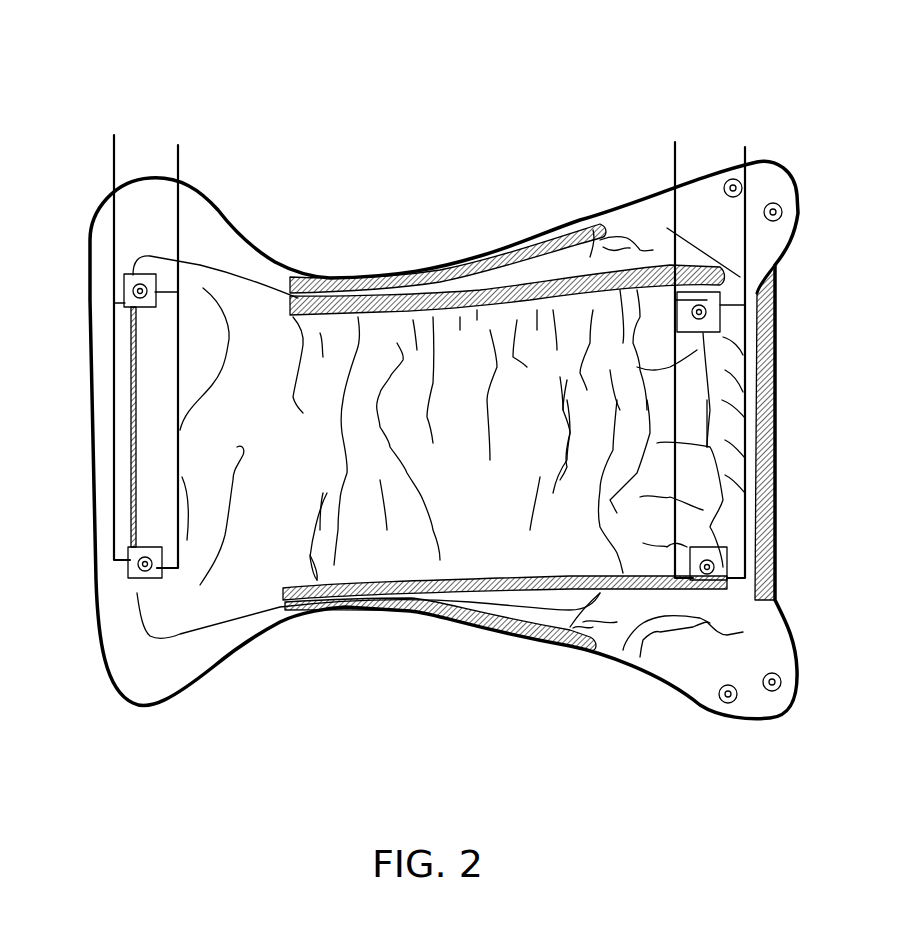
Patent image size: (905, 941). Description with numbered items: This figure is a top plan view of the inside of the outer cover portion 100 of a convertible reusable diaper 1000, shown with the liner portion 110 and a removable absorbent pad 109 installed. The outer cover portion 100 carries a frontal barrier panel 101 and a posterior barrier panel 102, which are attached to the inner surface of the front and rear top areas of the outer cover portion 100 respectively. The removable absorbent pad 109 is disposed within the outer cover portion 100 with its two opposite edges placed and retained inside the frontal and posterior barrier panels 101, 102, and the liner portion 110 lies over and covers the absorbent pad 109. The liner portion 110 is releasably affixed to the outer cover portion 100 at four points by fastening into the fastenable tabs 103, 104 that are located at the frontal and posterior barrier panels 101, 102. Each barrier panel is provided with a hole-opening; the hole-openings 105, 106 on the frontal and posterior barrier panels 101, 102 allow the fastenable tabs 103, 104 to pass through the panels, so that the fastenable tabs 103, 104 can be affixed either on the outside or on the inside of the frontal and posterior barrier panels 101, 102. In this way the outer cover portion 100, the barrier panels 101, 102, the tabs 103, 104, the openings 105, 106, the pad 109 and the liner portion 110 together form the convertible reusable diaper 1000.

The convertible reusable diaper 1000 is at (410, 98).
The outer cover portion 100 is at (85, 244).
The frontal barrier panel 101 is at (230, 253).
The posterior barrier panel 102 is at (655, 243).
The fastenable tab 103 is at (176, 340).
The fastenable tab 104 is at (684, 345).
The hole-opening 105 is at (117, 332).
The hole-opening 106 is at (742, 347).
The removable absorbent pad 109 is at (500, 295).
The liner portion 110 is at (379, 338).